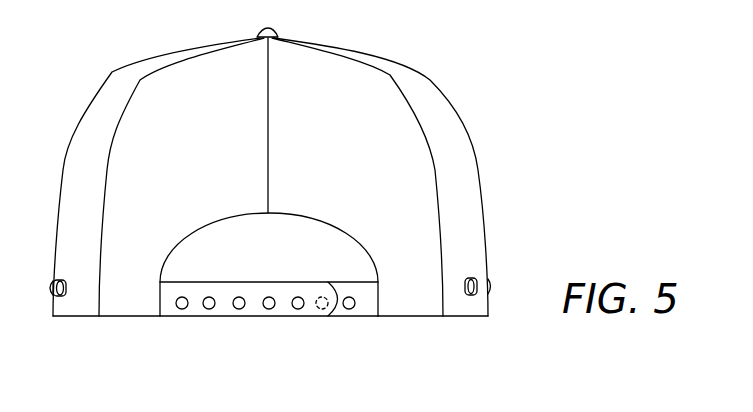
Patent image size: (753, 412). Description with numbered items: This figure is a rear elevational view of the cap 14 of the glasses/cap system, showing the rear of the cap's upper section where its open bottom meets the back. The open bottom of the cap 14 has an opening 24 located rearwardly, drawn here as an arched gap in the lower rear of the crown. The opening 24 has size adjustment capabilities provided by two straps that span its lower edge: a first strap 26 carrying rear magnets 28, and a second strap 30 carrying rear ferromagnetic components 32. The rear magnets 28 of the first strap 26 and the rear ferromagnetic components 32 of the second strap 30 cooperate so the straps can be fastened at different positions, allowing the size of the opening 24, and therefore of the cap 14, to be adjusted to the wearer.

The cap 14 is at (463, 121).
The opening 24 is at (322, 252).
The first strap 26 is at (363, 305).
The rear magnets 28 is at (349, 309).
The second strap 30 is at (223, 316).
The rear ferromagnetic components 32 is at (207, 309).